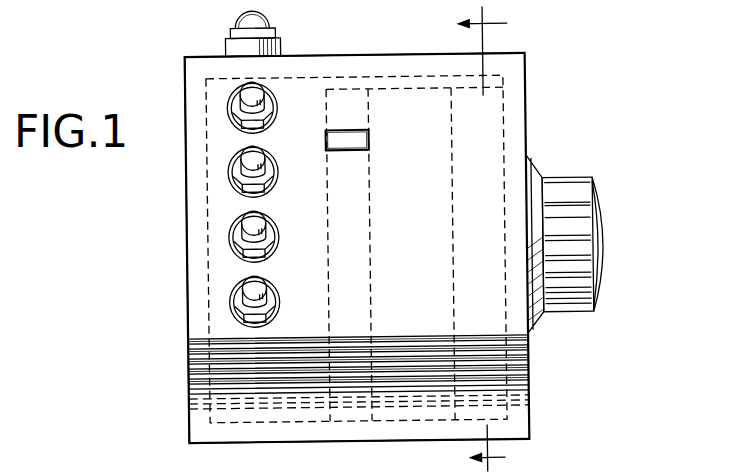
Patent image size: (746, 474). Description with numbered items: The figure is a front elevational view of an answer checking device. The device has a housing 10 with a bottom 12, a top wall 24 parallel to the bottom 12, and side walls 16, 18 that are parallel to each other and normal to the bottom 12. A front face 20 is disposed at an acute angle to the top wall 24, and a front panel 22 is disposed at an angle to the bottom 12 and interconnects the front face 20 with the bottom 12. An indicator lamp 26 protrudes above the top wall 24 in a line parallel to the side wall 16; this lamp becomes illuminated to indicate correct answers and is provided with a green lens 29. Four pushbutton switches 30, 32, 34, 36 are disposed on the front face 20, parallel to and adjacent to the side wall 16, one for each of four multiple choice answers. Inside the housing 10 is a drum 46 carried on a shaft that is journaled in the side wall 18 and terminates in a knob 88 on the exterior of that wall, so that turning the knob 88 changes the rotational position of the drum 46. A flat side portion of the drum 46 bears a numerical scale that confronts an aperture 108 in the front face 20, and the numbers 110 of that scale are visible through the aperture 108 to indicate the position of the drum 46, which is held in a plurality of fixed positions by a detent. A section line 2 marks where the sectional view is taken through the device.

The section line 2- 2 is at (496, 239).
The housing 10 is at (527, 105).
The bottom 12 is at (260, 430).
The side wall 16 is at (186, 213).
The side wall 18 is at (531, 367).
The front face 20 is at (419, 225).
The front panel 22 is at (240, 373).
The top wall 24 is at (384, 64).
The indicator lamp 26 is at (232, 28).
The lens 29 is at (268, 14).
The pushbutton switch 30 is at (230, 90).
The pushbutton switch 32 is at (232, 155).
The pushbutton switch 34 is at (232, 230).
The pushbutton switch 36 is at (232, 282).
The drum 46 is at (478, 149).
The knob 88 is at (600, 218).
The aperture 108 is at (370, 142).
The numbers 110 is at (370, 134).